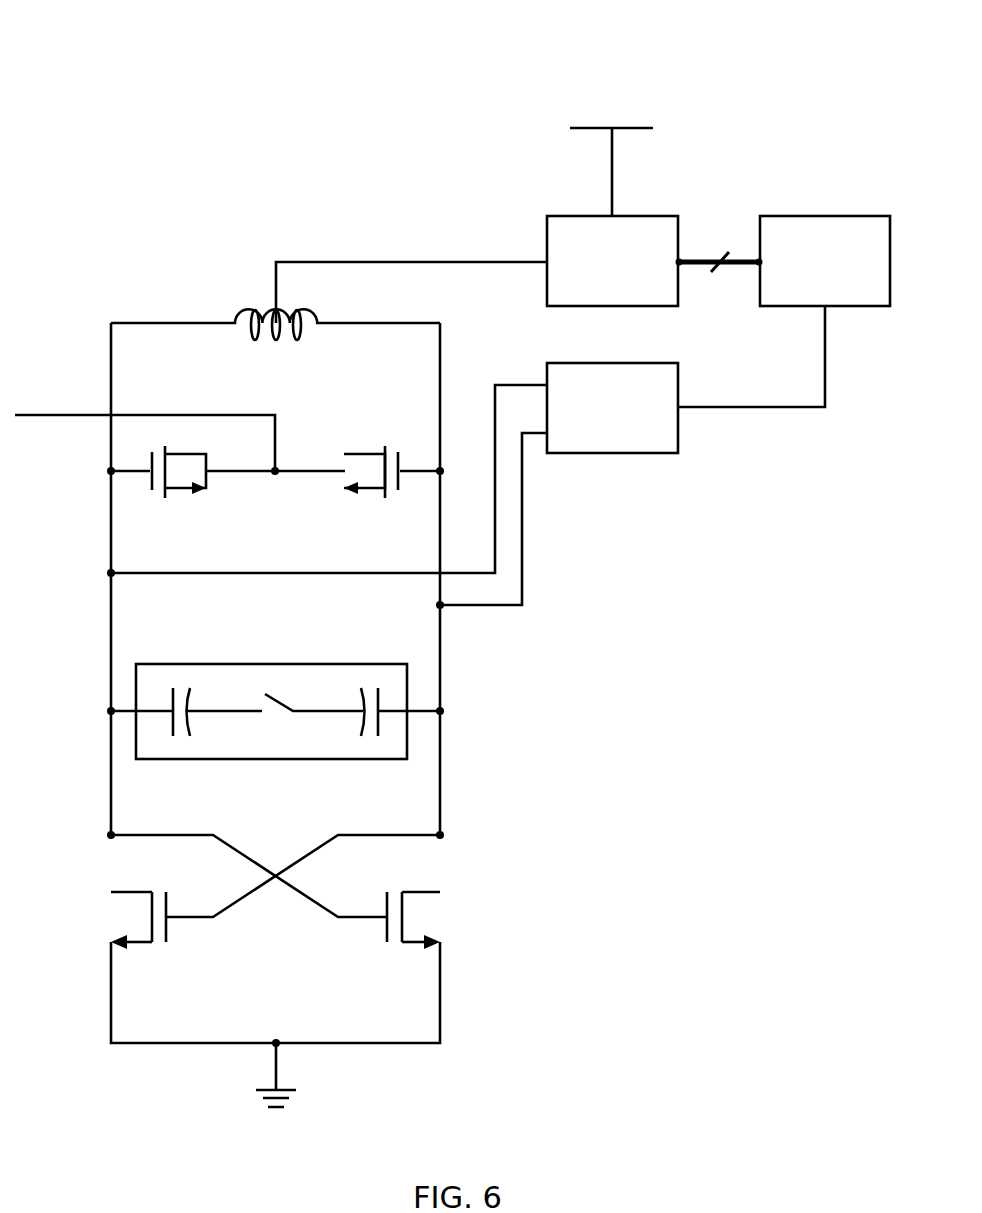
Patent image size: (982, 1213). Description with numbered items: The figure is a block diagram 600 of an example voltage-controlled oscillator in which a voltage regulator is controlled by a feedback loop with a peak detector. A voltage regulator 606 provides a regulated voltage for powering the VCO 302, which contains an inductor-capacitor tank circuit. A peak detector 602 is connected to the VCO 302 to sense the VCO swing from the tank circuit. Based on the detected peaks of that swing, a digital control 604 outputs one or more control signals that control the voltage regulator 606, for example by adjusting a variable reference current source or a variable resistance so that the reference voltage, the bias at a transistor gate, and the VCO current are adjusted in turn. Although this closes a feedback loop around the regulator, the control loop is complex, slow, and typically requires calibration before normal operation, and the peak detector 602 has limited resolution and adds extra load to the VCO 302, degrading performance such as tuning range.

The block diagram 600 is at (458, 554).
The VCO 302 is at (455, 215).
The voltage regulator 606 is at (647, 216).
The digital control 604 is at (843, 216).
The peak detector 602 is at (625, 363).